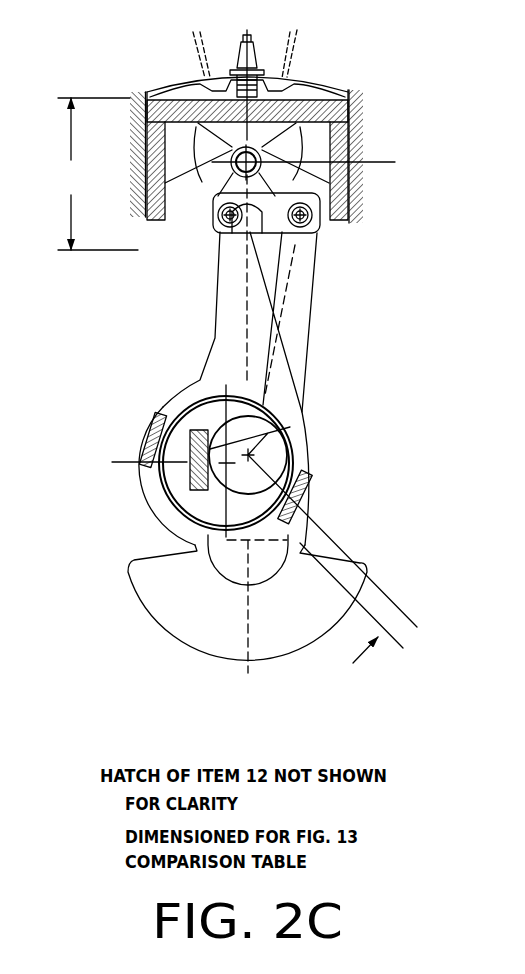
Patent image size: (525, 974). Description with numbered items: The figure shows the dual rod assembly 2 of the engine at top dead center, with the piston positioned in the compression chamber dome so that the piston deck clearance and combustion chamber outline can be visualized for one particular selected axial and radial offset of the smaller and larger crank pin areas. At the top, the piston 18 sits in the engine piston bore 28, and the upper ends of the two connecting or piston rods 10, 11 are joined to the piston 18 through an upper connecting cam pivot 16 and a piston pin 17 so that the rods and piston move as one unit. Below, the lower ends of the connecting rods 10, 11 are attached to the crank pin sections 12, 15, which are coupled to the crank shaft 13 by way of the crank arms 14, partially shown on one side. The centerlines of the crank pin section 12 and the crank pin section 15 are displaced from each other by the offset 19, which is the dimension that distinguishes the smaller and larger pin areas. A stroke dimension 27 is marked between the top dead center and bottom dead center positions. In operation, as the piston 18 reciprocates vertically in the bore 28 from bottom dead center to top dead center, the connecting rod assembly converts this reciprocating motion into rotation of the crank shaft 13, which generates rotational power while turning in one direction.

The assembly 2 is at (367, 262).
The connecting rod 10 is at (307, 345).
The connecting rod 11 is at (212, 337).
The crank pin section 12 is at (180, 485).
The crank shaft 13 is at (223, 578).
The crank arms 14 is at (127, 586).
The crank pin section 15 is at (290, 427).
The upper connecting cam pivot 16 is at (350, 103).
The piston pin 17 is at (254, 146).
The piston 18 is at (187, 100).
The offset of centerlines 19 is at (412, 604).
The piston stroke dimension 27 is at (78, 181).
The engine piston bore 28 is at (356, 132).